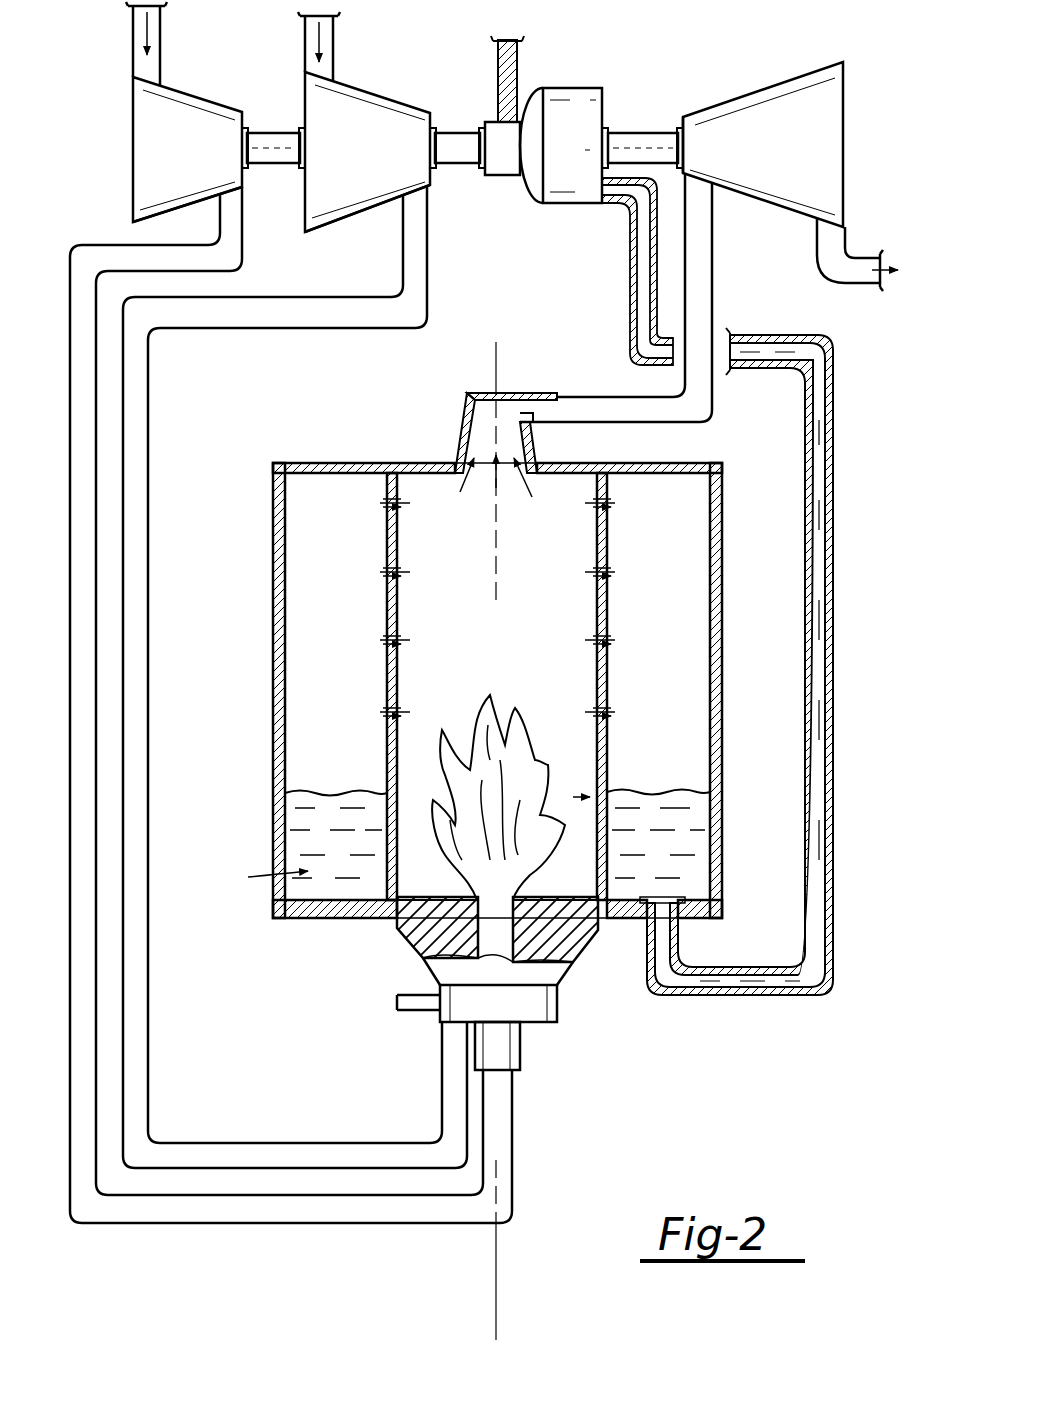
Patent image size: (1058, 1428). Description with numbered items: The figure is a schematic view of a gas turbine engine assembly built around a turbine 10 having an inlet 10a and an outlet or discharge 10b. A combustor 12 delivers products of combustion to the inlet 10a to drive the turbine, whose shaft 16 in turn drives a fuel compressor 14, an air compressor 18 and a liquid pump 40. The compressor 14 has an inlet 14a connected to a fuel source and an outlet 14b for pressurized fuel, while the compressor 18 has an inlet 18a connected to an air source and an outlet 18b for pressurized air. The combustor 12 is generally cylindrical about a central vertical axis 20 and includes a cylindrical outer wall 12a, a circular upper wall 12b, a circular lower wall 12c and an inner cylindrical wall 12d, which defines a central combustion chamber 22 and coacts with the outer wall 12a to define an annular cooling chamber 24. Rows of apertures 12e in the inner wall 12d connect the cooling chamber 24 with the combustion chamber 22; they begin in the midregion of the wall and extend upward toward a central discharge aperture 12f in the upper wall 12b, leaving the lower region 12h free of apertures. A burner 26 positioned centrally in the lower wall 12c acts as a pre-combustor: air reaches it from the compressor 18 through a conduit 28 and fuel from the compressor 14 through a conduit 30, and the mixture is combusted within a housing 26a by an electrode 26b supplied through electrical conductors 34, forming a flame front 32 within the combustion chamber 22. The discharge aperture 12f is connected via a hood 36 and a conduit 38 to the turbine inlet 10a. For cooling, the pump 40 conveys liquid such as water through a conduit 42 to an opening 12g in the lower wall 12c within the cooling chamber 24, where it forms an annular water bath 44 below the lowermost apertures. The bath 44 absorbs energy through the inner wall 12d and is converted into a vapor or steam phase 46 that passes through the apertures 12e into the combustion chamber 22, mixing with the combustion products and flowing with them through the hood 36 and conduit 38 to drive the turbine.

The turbine 10 is at (759, 78).
The inlet 10a is at (700, 170).
The outlet or discharge 10b is at (836, 210).
The combustor 12 is at (262, 716).
The cylindrical outer wall 12a is at (273, 594).
The circular upper wall 12b is at (350, 462).
The circular lower wall 12c is at (333, 917).
The inner cylindrical wall 12d is at (607, 595).
The apertures 12e is at (387, 590).
The central discharge aperture 12f is at (524, 495).
The opening 12g is at (663, 898).
The lower region of inner wall 12h is at (450, 891).
The compressor 14 is at (389, 97).
The inlet 14a is at (316, 90).
The outlet 14b is at (415, 184).
The shaft 16 is at (278, 131).
The compressor 18 is at (193, 94).
The inlet 18a is at (147, 83).
The outlet 18b is at (200, 198).
The central vertical axis 20 is at (500, 372).
The central combustion chamber 22 is at (545, 678).
The annular cooling chamber 24 is at (345, 756).
The burner 26 is at (388, 952).
The housing 26a is at (580, 965).
The electrode 26b is at (415, 1010).
The conduit 28 is at (213, 1225).
The conduit 30 is at (259, 1143).
The flame front 32 is at (573, 770).
The electrical conductors 34 is at (397, 1002).
The hood 36 is at (458, 437).
The conduit 38 is at (698, 410).
The pump 40 is at (589, 84).
The conduit 42 is at (834, 692).
The annular water bath 44 is at (462, 840).
The vapor or steam phase 46 is at (338, 653).